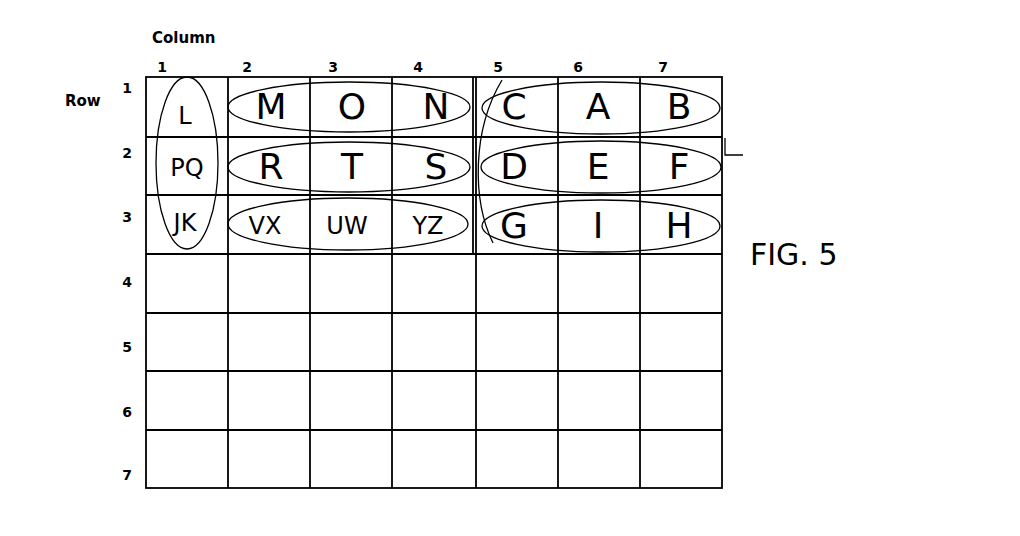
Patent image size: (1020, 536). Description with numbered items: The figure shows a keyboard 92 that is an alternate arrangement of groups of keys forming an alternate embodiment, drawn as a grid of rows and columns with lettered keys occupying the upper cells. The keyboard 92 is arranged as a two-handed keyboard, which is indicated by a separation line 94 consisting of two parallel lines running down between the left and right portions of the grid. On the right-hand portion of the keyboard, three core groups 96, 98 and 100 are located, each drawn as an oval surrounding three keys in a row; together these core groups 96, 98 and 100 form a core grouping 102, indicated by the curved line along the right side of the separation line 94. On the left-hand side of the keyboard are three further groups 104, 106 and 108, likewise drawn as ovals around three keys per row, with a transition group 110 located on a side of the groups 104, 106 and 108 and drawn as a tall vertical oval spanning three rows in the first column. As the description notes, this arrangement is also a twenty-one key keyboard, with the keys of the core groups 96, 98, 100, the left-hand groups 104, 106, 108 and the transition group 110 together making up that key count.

The keyboard 92 is at (727, 152).
The separation line 94 is at (475, 74).
The core group 96 is at (705, 98).
The core group 98 is at (700, 167).
The core group 100 is at (707, 223).
The core grouping 102 is at (492, 246).
The group 104 is at (305, 85).
The group 106 is at (245, 162).
The group 108 is at (408, 245).
The transition group 110 is at (162, 180).